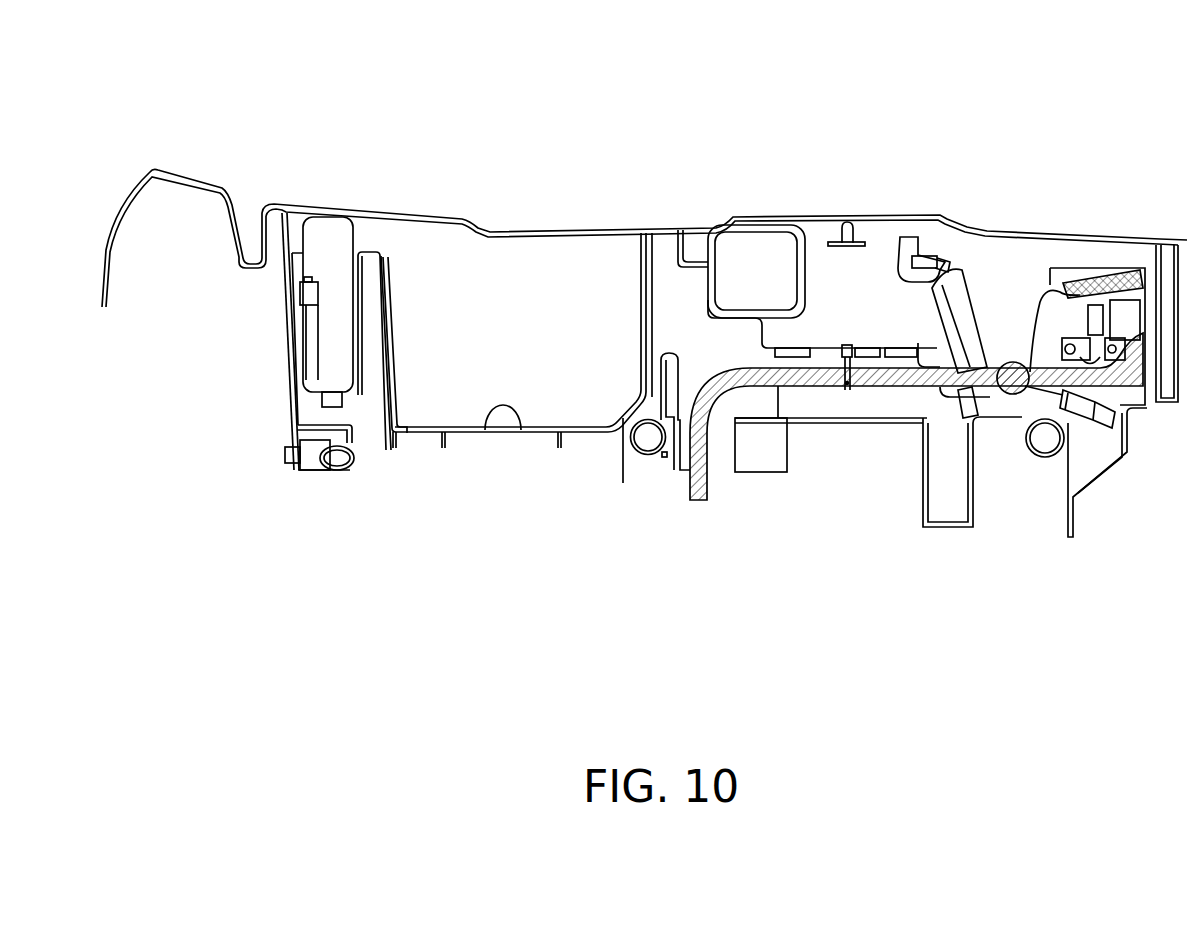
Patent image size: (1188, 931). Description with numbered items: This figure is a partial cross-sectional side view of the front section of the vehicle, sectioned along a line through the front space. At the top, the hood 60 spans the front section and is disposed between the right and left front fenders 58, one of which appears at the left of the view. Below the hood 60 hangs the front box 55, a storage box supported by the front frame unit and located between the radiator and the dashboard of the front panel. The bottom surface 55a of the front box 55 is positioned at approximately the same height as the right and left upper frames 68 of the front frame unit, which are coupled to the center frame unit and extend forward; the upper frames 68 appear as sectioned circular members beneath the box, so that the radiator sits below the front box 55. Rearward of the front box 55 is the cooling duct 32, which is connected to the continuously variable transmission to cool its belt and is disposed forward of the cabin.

The front fender 58 is at (180, 173).
The hood 60 is at (900, 217).
The front box 55 is at (517, 313).
The bottom surface 55a is at (488, 432).
The cooling duct 32 is at (775, 243).
The upper frame 68 is at (648, 438).